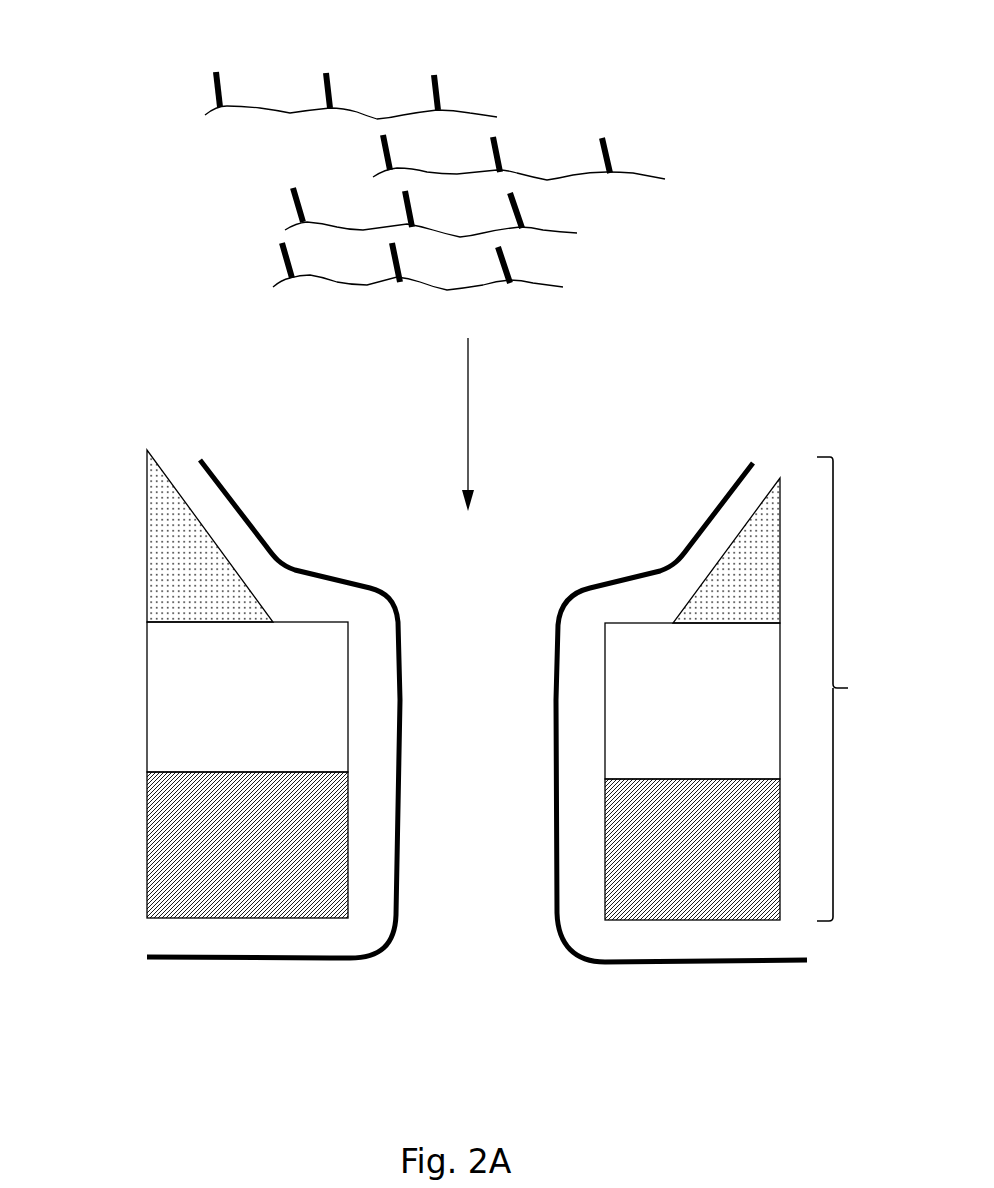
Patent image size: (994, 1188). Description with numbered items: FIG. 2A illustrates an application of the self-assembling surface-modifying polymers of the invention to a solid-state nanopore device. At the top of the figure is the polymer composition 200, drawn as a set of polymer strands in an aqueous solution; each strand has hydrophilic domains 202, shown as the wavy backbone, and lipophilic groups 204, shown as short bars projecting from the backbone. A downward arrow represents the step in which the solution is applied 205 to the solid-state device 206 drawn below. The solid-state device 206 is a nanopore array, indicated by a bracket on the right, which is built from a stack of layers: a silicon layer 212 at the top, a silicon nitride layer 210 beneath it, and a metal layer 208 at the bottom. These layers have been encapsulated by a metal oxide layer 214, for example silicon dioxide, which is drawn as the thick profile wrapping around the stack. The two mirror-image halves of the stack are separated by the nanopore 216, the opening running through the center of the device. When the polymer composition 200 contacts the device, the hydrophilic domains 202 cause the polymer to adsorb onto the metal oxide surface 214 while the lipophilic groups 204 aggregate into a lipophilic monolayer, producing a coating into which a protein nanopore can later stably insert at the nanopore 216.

The polymer composition 200 is at (665, 120).
The hydrophilic domains 202 is at (260, 107).
The lipophilic groups 204 is at (440, 92).
The application 205 is at (501, 424).
The solid-state device 206 is at (848, 688).
The metal layer 208 is at (192, 838).
The silicon nitride layer 210 is at (183, 690).
The silicon layer 212 is at (178, 548).
The metal oxide layer 214 is at (205, 935).
The nanopore 216 is at (492, 756).